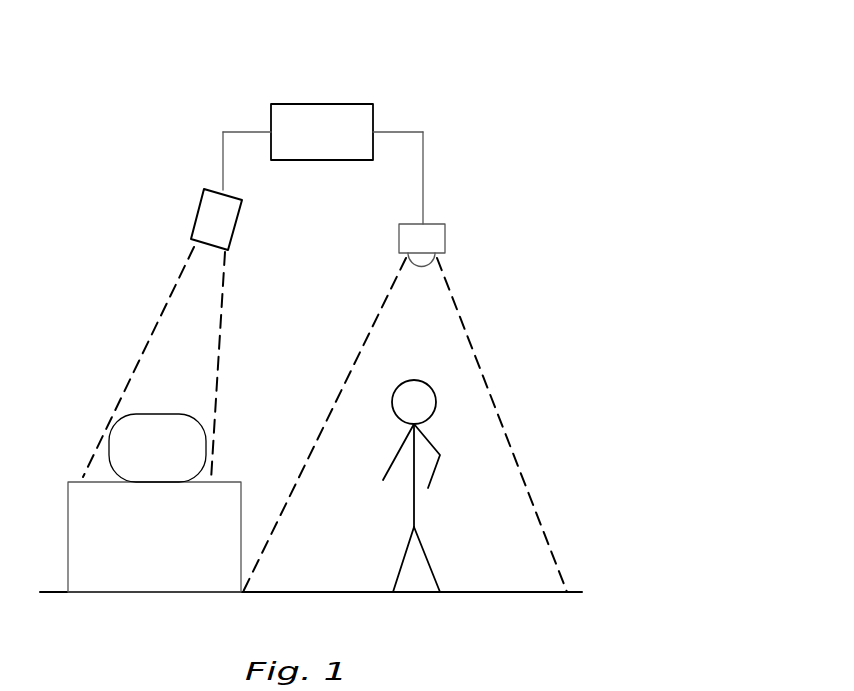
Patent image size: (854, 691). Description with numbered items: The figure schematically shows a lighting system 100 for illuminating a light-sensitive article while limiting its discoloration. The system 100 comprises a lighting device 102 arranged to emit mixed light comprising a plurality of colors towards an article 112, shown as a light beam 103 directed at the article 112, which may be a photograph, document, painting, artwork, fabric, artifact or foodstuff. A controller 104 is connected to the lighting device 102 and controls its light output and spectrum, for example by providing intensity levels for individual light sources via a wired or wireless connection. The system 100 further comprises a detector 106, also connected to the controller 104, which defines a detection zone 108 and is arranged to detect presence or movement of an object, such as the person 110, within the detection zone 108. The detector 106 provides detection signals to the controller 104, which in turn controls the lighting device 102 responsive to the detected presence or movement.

The lighting system 100 is at (500, 110).
The lighting device 102 is at (198, 212).
The light beam 103 is at (167, 302).
The controller 104 is at (344, 143).
The detector 106 is at (445, 238).
The detection zone 108 is at (494, 403).
The person 110 is at (447, 482).
The article 112 is at (180, 461).